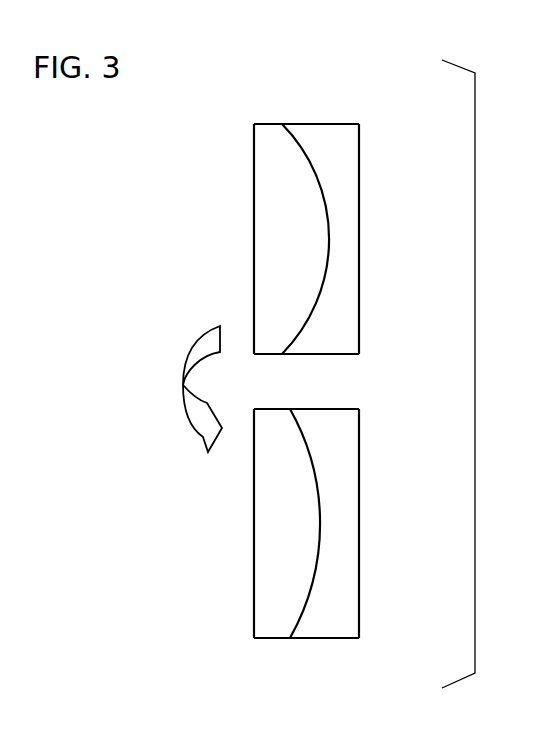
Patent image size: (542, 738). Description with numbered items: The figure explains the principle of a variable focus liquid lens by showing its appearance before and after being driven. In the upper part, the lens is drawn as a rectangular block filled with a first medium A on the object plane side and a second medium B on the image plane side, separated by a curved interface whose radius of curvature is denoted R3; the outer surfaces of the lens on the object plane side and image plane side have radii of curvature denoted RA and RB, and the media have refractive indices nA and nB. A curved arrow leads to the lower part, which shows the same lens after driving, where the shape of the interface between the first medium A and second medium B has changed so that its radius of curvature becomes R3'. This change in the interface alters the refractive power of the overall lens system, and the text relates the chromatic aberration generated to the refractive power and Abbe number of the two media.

The radius of curvature of the interface R3 is at (308, 211).
The changed radius of curvature of the interface R3' is at (320, 547).